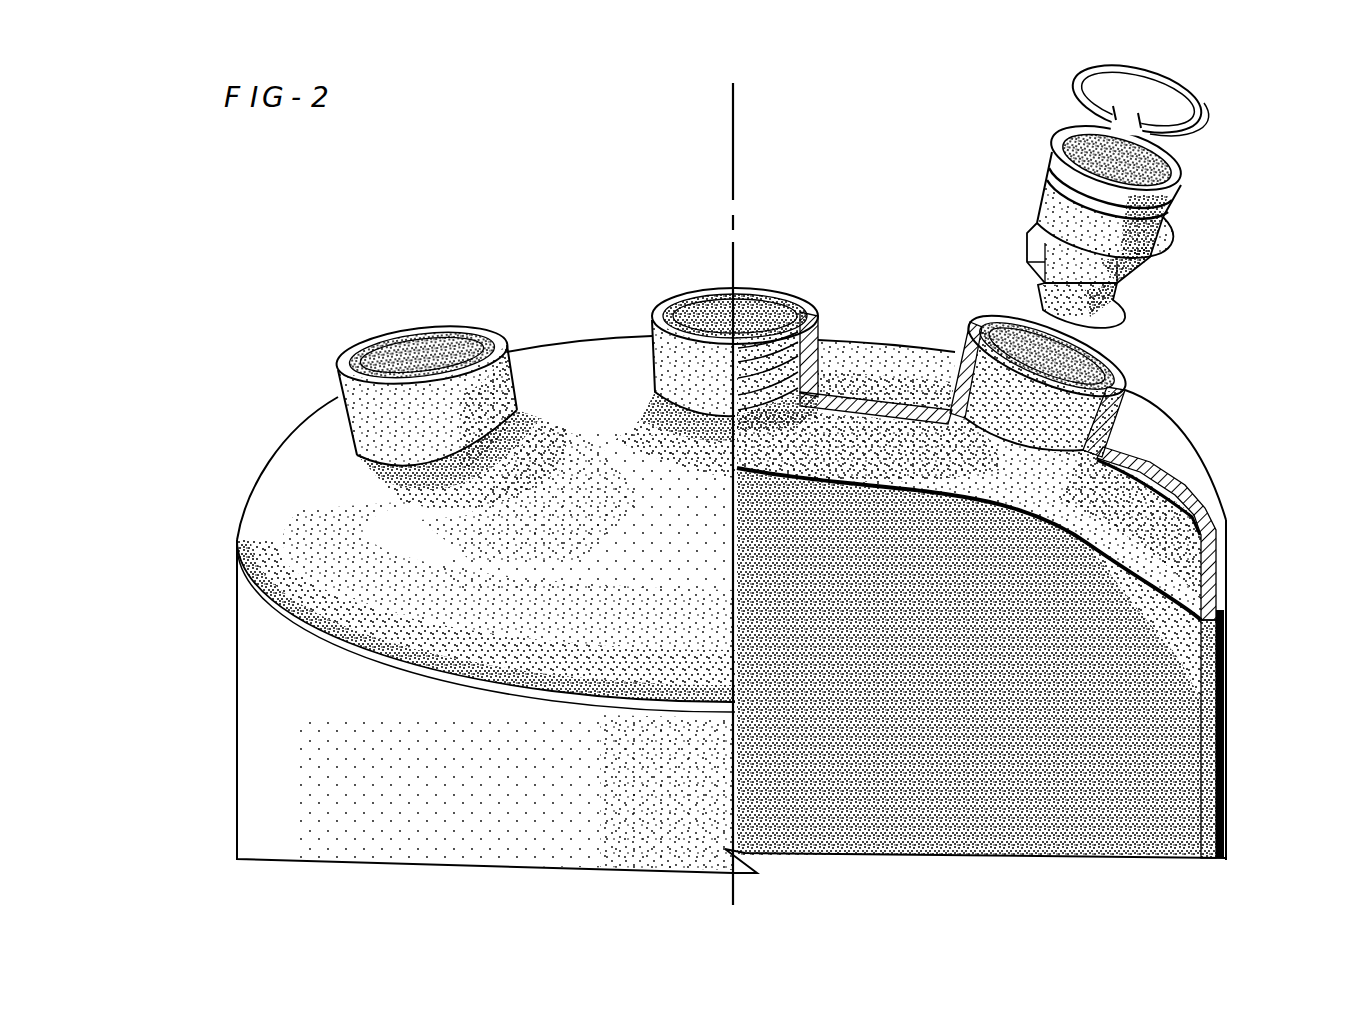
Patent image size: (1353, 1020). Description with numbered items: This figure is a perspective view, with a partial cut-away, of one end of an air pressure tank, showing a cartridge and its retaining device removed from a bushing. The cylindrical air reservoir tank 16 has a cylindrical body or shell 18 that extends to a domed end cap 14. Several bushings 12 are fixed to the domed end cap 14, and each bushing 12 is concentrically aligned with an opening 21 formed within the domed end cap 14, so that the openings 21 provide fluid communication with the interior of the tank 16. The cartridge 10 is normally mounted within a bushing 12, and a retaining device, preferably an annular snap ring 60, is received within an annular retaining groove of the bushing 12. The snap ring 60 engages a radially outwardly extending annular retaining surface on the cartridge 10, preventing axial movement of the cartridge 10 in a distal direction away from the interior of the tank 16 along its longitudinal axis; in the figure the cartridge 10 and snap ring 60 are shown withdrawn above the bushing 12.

The cartridge 10 is at (1157, 237).
The bushing 12 is at (340, 398).
The domed end cap 14 is at (550, 348).
The air reservoir tank 16 is at (232, 625).
The cylindrical body or shell 18 is at (1226, 683).
The opening 21 is at (1028, 400).
The annular snap ring 60 is at (1205, 107).